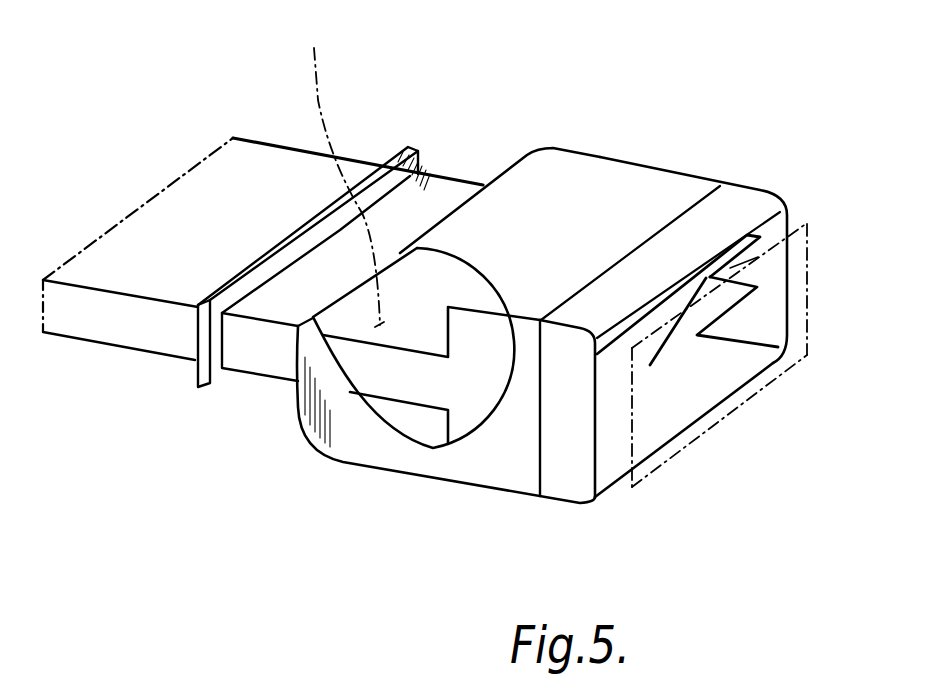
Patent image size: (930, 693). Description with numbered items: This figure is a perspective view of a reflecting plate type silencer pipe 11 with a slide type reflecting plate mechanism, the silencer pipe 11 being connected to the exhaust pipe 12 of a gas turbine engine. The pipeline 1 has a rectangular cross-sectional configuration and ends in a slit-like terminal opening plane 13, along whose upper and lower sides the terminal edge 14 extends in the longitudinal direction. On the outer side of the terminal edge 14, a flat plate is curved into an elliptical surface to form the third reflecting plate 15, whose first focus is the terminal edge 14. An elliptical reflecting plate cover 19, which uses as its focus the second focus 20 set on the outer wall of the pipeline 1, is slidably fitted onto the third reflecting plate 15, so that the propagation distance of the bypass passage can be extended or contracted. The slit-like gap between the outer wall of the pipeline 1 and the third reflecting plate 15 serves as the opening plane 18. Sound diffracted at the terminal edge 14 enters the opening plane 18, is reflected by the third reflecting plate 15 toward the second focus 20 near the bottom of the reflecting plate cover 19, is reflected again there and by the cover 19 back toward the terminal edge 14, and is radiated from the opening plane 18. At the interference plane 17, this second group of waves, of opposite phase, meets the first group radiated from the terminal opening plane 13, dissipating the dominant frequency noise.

The pipeline 1 is at (453, 180).
The reflecting plate type silencer pipe 11 is at (683, 127).
The exhaust pipe 12 is at (258, 138).
The terminal opening plane 13 is at (700, 315).
The terminal edge 14 is at (637, 380).
The third reflecting plate 15 is at (662, 447).
The interference plane 17 is at (825, 242).
The opening plane 18 is at (706, 360).
The reflecting plate cover 19 is at (602, 158).
The second focus 20 is at (339, 164).